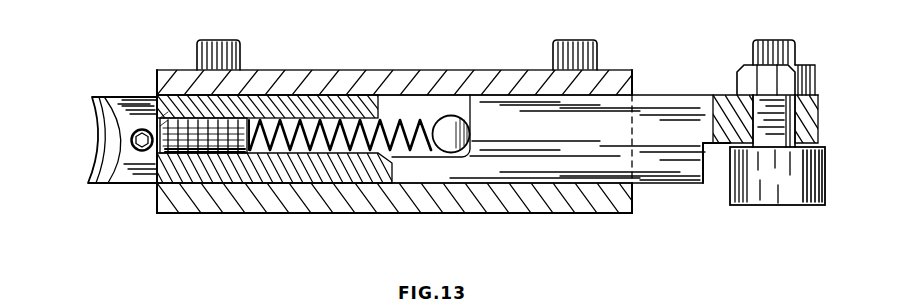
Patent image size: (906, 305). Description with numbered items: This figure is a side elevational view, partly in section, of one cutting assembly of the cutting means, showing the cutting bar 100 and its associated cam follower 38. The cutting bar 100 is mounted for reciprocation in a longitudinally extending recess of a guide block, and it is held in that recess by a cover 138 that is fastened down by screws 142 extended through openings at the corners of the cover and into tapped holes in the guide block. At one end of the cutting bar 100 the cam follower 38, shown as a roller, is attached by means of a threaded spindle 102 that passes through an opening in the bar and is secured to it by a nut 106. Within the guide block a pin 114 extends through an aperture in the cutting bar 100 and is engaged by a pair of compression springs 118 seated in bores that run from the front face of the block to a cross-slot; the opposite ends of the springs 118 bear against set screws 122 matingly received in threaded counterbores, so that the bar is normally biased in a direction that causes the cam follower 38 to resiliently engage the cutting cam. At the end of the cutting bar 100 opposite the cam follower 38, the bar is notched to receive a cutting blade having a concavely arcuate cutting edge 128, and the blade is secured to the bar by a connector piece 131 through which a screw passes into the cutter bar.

The cam follower 38 is at (771, 186).
The cutting bar 100 is at (656, 112).
The threaded spindle 102 is at (760, 40).
The nut 106 is at (745, 82).
The detent ball 114 is at (452, 126).
The compression springs 118 is at (382, 118).
The set screws 122 is at (227, 124).
The concavely arcuate cutting edge 128 is at (97, 140).
The connector piece 131 is at (122, 102).
The cover 138 is at (342, 82).
The screws 142 is at (236, 42).